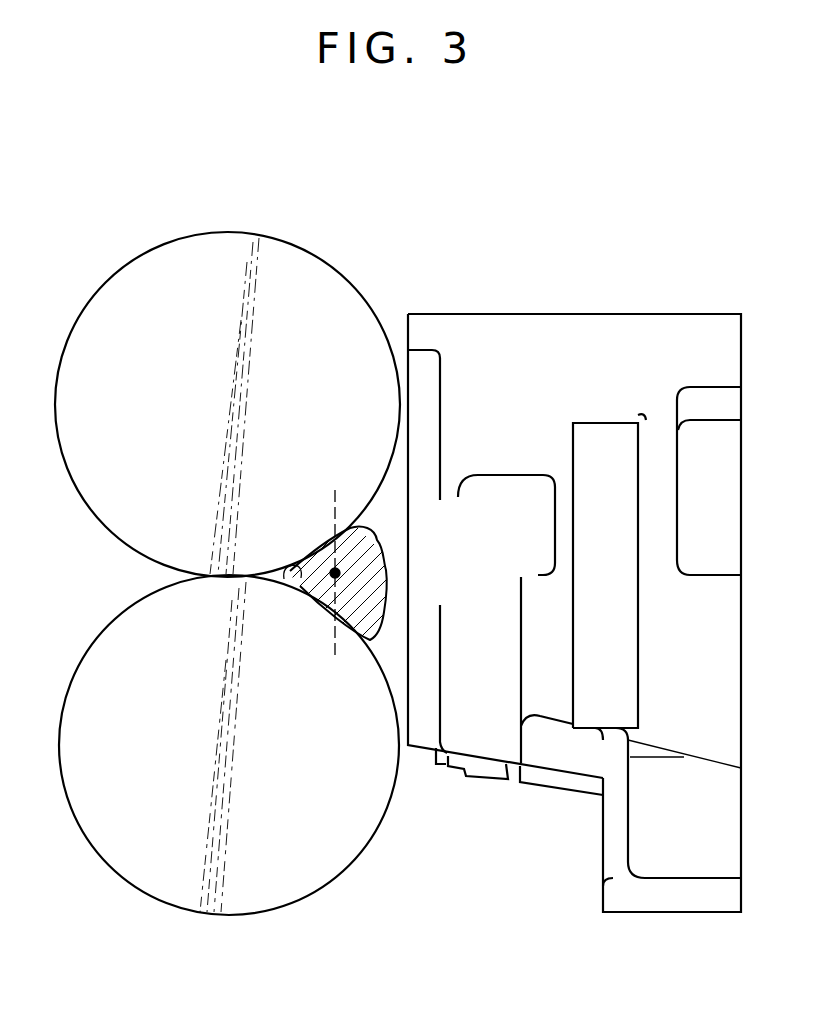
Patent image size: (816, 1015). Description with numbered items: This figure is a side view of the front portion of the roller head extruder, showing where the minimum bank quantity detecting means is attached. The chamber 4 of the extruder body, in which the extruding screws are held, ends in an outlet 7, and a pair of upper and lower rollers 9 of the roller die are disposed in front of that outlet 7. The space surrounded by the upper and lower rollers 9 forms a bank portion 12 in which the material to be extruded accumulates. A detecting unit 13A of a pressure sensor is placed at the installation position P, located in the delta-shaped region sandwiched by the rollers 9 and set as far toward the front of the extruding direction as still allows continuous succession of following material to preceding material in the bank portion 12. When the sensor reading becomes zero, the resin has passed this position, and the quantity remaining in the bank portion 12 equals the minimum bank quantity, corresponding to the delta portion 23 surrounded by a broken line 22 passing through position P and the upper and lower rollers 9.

The chamber 4 is at (611, 331).
The outlet 7 is at (408, 388).
The upper and lower rollers 9 is at (231, 581).
The bank portion 12 is at (398, 668).
The detecting unit 13A is at (338, 572).
The broken line 22 is at (333, 643).
The delta portion 23 is at (278, 565).